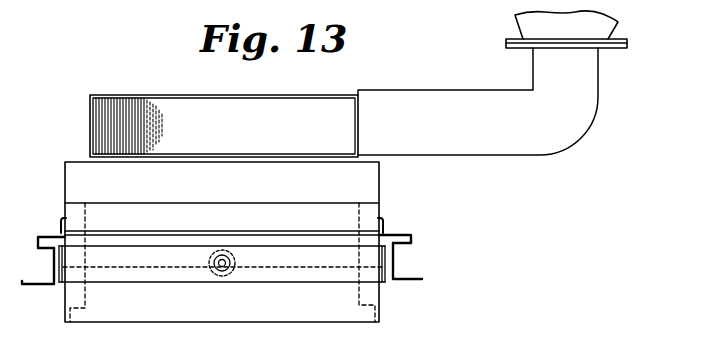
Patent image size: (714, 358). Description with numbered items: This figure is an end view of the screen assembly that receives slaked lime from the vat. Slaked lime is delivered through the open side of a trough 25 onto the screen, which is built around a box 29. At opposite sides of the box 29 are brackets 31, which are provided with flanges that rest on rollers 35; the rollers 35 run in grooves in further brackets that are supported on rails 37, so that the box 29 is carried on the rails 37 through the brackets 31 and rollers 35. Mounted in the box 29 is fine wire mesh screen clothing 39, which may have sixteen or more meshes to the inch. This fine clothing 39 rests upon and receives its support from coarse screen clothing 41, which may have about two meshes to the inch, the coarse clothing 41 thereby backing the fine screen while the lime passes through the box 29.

The trough 25 is at (358, 92).
The box 29 is at (372, 178).
The brackets 31 is at (60, 226).
The rollers 35 is at (37, 239).
The rails 37 is at (48, 256).
The fine wire mesh screen clothing 39 is at (263, 268).
The coarse screen clothing 41 is at (270, 268).